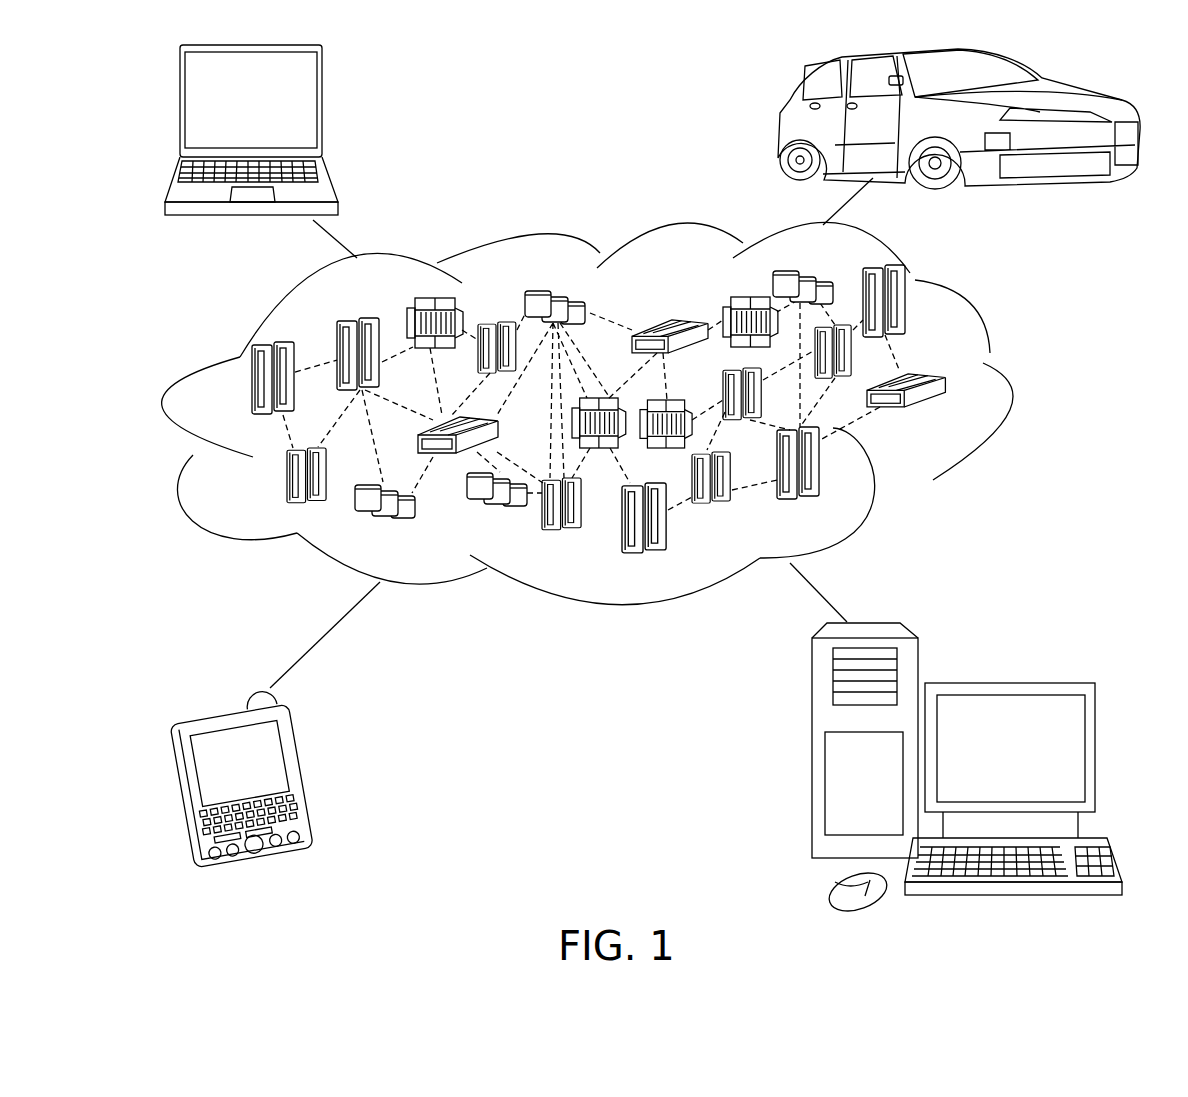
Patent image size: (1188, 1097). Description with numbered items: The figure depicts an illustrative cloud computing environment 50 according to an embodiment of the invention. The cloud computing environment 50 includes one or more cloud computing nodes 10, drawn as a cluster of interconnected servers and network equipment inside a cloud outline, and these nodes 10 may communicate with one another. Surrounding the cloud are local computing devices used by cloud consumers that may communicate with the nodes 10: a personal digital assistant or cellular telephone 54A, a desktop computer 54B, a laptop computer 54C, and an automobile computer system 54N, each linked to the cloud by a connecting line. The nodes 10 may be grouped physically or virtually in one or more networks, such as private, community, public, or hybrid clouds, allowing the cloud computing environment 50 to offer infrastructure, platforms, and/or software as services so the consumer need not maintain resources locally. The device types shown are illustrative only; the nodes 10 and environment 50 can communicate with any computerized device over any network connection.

The cloud computing nodes 10 is at (950, 418).
The cloud computing environment 50 is at (1007, 383).
The personal digital assistant or cellular telephone 54A is at (310, 782).
The desktop computer 54B is at (1007, 680).
The laptop computer 54C is at (322, 108).
The automobile computer system 54N is at (780, 126).